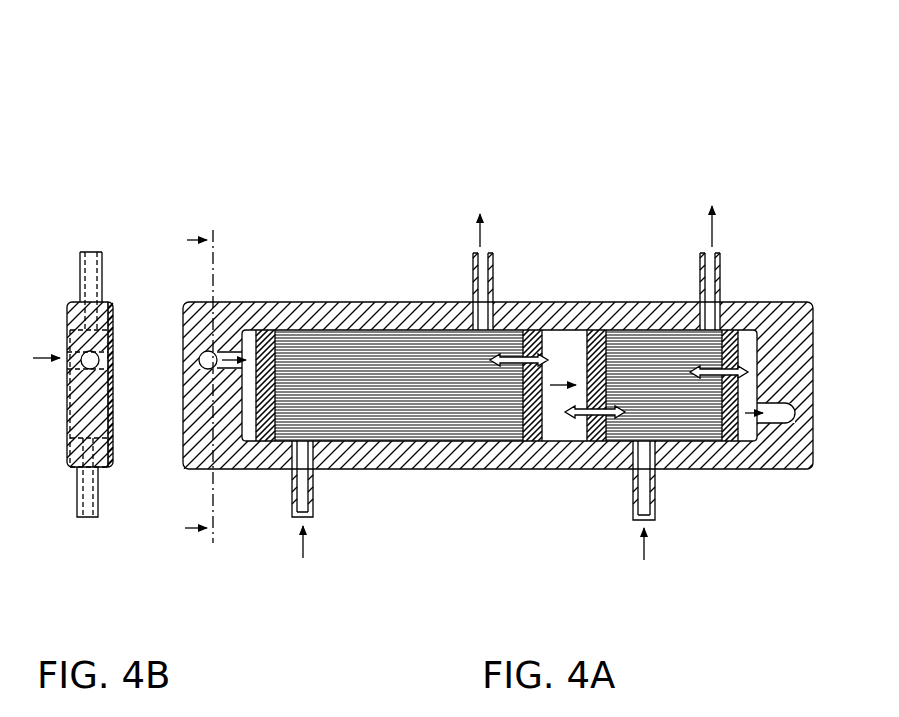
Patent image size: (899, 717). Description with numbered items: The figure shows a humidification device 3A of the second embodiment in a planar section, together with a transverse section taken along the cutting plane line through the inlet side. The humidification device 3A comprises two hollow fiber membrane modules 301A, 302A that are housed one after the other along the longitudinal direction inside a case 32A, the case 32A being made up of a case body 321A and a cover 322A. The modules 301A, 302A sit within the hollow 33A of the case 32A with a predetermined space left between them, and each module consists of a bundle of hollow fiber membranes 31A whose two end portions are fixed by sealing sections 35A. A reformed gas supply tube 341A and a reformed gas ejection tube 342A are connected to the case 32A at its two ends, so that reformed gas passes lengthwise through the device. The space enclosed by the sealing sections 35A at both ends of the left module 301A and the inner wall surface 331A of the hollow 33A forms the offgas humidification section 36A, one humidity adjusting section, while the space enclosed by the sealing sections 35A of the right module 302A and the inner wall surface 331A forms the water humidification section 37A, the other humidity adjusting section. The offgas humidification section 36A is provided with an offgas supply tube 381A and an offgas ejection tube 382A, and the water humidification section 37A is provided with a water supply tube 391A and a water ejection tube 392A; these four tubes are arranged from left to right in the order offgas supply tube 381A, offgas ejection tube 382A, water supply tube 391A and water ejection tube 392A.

In FIG. 4A, the humidification device 3A is at (519, 74).
In FIG. 4A, the hollow fiber membrane module 301A is at (582, 133).
In FIG. 4A, the hollow fiber membrane module 302A is at (788, 134).
In FIG. 4A, the hollow fiber membrane bundle 31A is at (394, 339).
In FIG. 4A, the case 32A is at (359, 289).
In FIG. 4B, the case 32A is at (225, 599).
In FIG. 4A, the hollow 33A is at (247, 330).
In FIG. 4B, the hollow 33A is at (70, 468).
In FIG. 4A, the case body 321A is at (257, 303).
In FIG. 4B, the case body 321A is at (103, 470).
In FIG. 4B, the cover 322A is at (105, 466).
In FIG. 4A, the inner wall surface 331A is at (564, 330).
In FIG. 4A, the reformed gas supply tube 341A is at (207, 352).
In FIG. 4B, the reformed gas supply tube 341A is at (88, 352).
In FIG. 4A, the reformed gas ejection tube 342A is at (782, 423).
In FIG. 4A, the sealing section 35A is at (270, 330).
In FIG. 4A, the offgas humidification section 36A is at (272, 470).
In FIG. 4A, the water humidification section 37A is at (603, 441).
In FIG. 4A, the offgas supply tube 381A is at (312, 508).
In FIG. 4B, the offgas supply tube 381A is at (87, 518).
In FIG. 4A, the offgas ejection tube 382A is at (481, 253).
In FIG. 4B, the offgas ejection tube 382A is at (92, 252).
In FIG. 4A, the water supply tube 391A is at (647, 520).
In FIG. 4A, the water ejection tube 392A is at (713, 253).